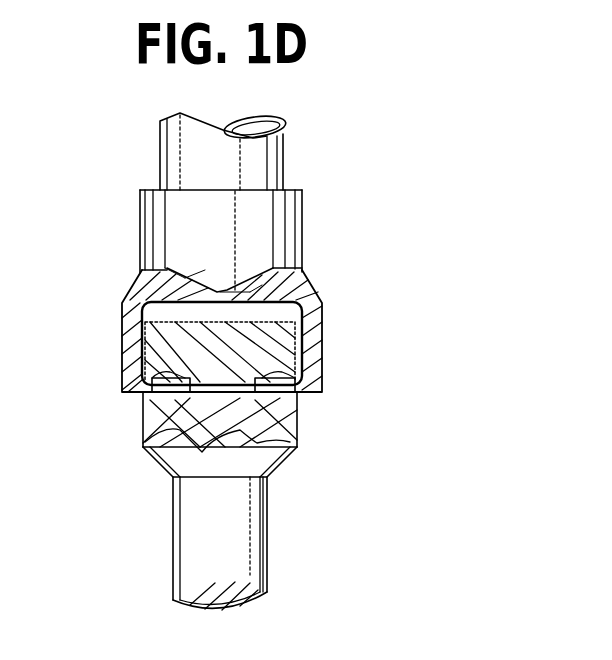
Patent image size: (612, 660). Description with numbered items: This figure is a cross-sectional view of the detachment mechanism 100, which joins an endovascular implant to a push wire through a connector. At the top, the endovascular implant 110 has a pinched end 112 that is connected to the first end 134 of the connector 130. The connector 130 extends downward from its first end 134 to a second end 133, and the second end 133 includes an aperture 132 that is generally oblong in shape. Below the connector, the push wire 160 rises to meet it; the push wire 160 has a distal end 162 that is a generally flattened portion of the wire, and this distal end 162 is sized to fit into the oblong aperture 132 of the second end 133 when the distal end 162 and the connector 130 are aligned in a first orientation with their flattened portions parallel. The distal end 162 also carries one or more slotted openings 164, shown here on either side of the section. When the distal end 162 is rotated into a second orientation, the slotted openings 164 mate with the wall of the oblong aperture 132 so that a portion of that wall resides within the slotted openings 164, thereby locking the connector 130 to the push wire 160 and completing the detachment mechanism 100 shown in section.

The detachment mechanism 100 is at (334, 304).
The endovascular implant 110 is at (265, 151).
The pinched end 112 is at (200, 178).
The connector 130 is at (160, 241).
The aperture 132 is at (143, 442).
The second end 133 is at (322, 369).
The first end 134 is at (302, 233).
The push wire 160 is at (268, 585).
The distal end 162 is at (273, 466).
The slotted openings 164 is at (143, 402).